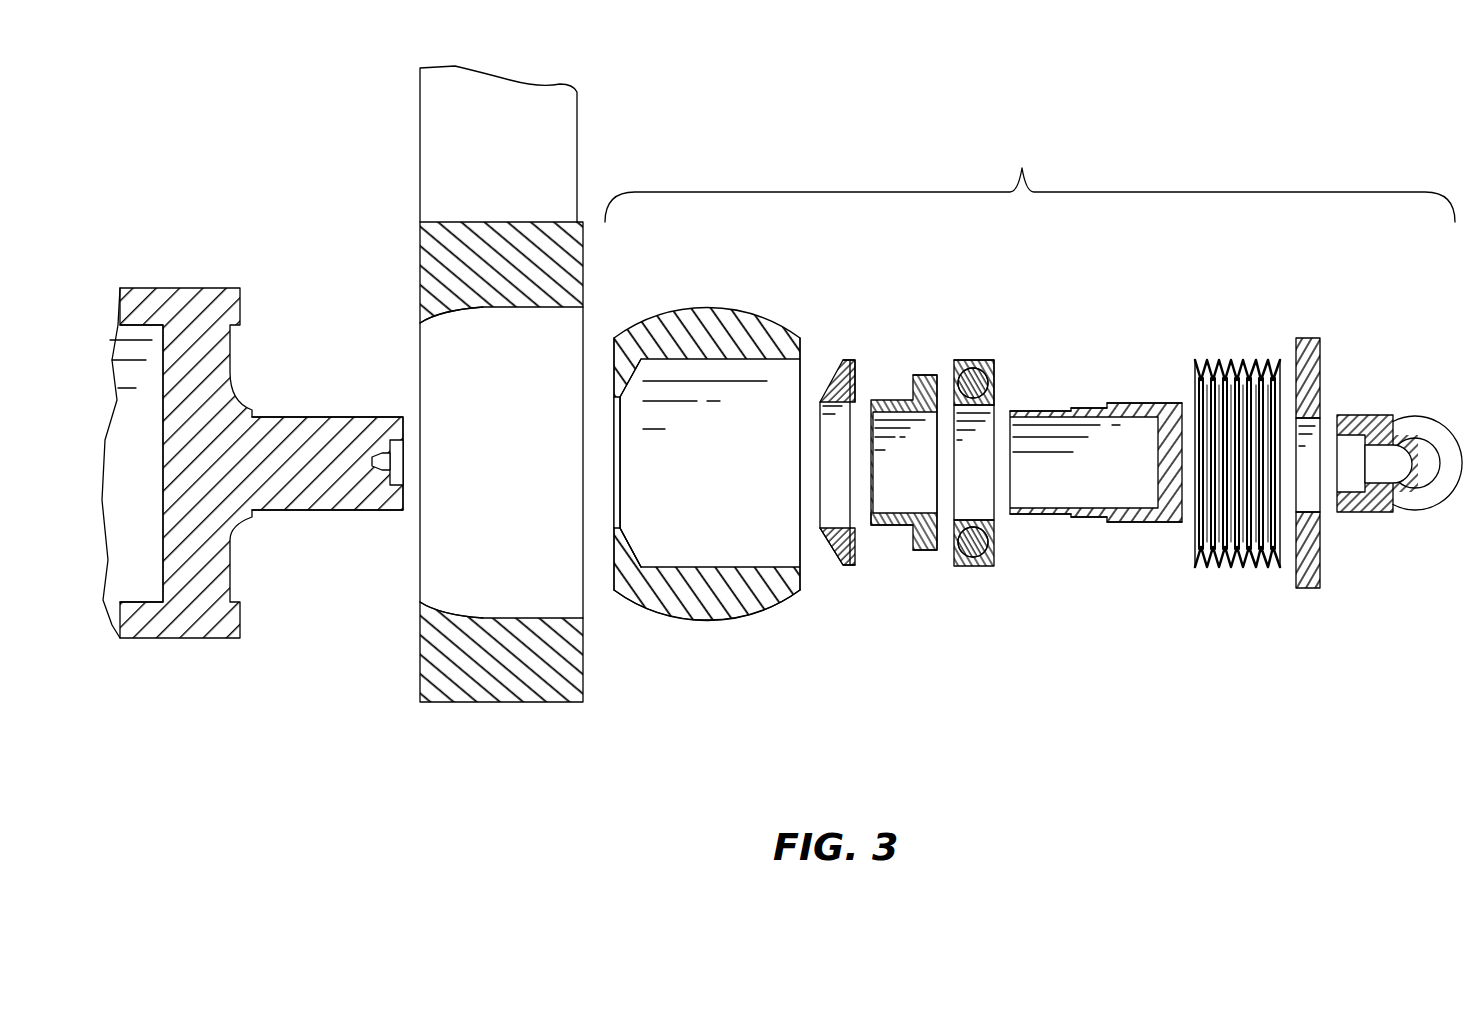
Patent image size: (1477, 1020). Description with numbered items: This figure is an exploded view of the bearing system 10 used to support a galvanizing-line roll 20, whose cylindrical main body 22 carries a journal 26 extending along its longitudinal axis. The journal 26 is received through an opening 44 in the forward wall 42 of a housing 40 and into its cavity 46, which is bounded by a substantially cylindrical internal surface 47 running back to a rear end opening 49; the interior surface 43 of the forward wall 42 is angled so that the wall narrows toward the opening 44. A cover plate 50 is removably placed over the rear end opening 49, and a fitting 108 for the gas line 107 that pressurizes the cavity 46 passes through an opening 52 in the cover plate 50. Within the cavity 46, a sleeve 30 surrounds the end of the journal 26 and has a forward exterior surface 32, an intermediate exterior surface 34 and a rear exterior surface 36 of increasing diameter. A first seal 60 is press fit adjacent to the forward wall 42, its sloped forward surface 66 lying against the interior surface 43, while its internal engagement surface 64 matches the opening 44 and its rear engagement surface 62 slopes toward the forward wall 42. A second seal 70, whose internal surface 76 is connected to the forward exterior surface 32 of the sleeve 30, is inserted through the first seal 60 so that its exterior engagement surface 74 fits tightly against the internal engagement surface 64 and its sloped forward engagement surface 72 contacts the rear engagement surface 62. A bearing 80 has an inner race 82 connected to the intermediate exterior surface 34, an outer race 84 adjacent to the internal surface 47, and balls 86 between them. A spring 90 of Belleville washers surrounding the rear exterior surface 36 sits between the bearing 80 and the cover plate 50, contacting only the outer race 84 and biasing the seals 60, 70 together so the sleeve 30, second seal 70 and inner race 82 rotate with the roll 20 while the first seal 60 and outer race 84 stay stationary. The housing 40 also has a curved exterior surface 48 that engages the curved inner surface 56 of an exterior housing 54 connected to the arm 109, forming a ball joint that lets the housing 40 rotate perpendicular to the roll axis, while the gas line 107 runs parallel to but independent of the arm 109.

The bearing system 10 is at (1030, 181).
The roll 20 is at (252, 451).
The main body 22 is at (192, 638).
The journal 26 is at (347, 417).
The sleeve 30 is at (1096, 458).
The forward exterior surface 32 is at (1038, 514).
The intermediate exterior surface 34 is at (1090, 517).
The rear exterior surface 36 is at (1140, 522).
The housing 40 is at (722, 456).
The forward wall 42 is at (614, 380).
The interior surface 43 is at (630, 538).
The opening 44 is at (614, 528).
The cavity 46 is at (803, 372).
The internal surface 47 is at (708, 478).
The curved exterior surface 48 is at (666, 612).
The rear end opening 49 is at (803, 578).
The cover plate 50 is at (1327, 422).
The opening 52 is at (1322, 418).
The exterior housing 54 is at (463, 425).
The curved inner surface 56 is at (500, 307).
The first seal 60 is at (864, 437).
The rear engagement surface 62 is at (855, 400).
The internal engagement surface 64 is at (845, 408).
The sloped forward surface 66 is at (848, 565).
The second seal 70 is at (903, 426).
The forward engagement surface 72 is at (917, 395).
The exterior engagement surface 74 is at (885, 525).
The internal surface 76 is at (903, 520).
The bearing 80 is at (1008, 447).
The inner race 82 is at (973, 402).
The outer race 84 is at (985, 362).
The balls 86 is at (990, 383).
The spring 90 is at (1232, 360).
The gas line 107 is at (1433, 418).
The fitting 108 is at (1366, 415).
The arm 109 is at (420, 108).